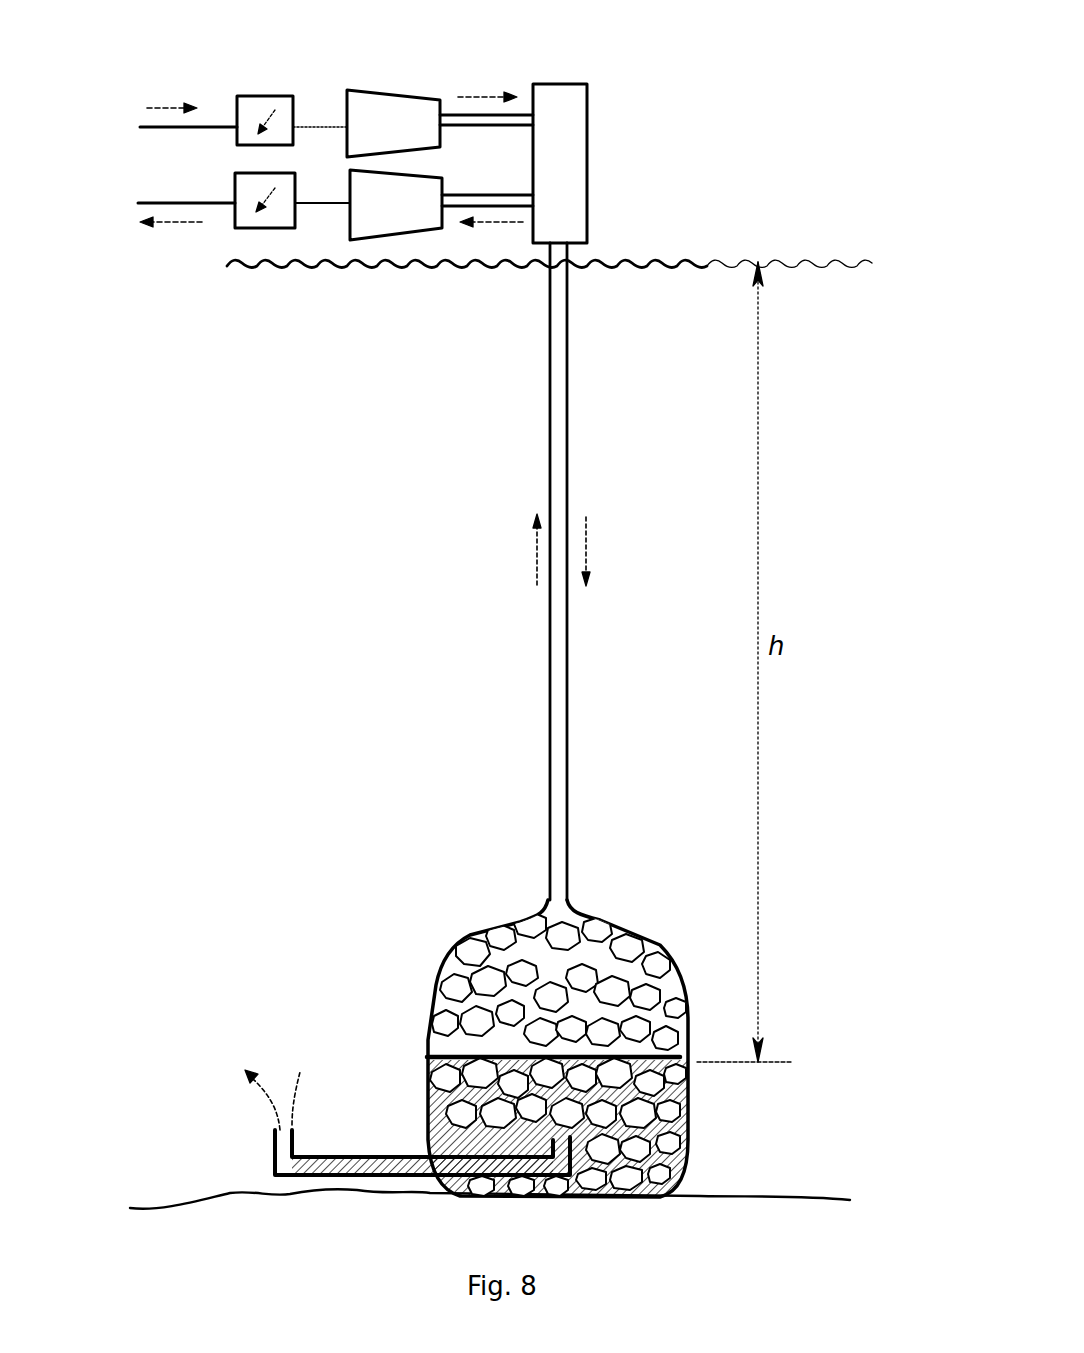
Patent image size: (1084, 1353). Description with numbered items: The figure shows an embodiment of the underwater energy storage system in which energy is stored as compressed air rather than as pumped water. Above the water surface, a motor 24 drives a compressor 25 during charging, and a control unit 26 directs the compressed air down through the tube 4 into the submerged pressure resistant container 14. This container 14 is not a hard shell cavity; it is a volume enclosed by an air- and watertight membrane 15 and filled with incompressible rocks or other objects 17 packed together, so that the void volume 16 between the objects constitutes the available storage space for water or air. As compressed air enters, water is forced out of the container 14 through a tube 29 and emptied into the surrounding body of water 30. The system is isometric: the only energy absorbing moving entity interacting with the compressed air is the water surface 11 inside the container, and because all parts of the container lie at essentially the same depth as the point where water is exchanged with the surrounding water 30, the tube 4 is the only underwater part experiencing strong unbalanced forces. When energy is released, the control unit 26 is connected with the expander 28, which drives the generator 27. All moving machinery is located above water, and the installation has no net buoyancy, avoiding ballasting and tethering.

The tube 4 is at (560, 668).
The water surface 11 is at (570, 1053).
The pressure resistant container 14 is at (547, 973).
The air- and watertight membrane 15 is at (682, 1148).
The void volume 16 is at (647, 990).
The incompressible rocks or other objects 17 is at (645, 965).
The motor 24 is at (257, 110).
The compressor 25 is at (383, 112).
The control unit 26 is at (573, 142).
The generator 27 is at (282, 208).
The expander 28 is at (410, 210).
The tube 29 is at (495, 1167).
The surrounding body of water 30 is at (262, 1103).